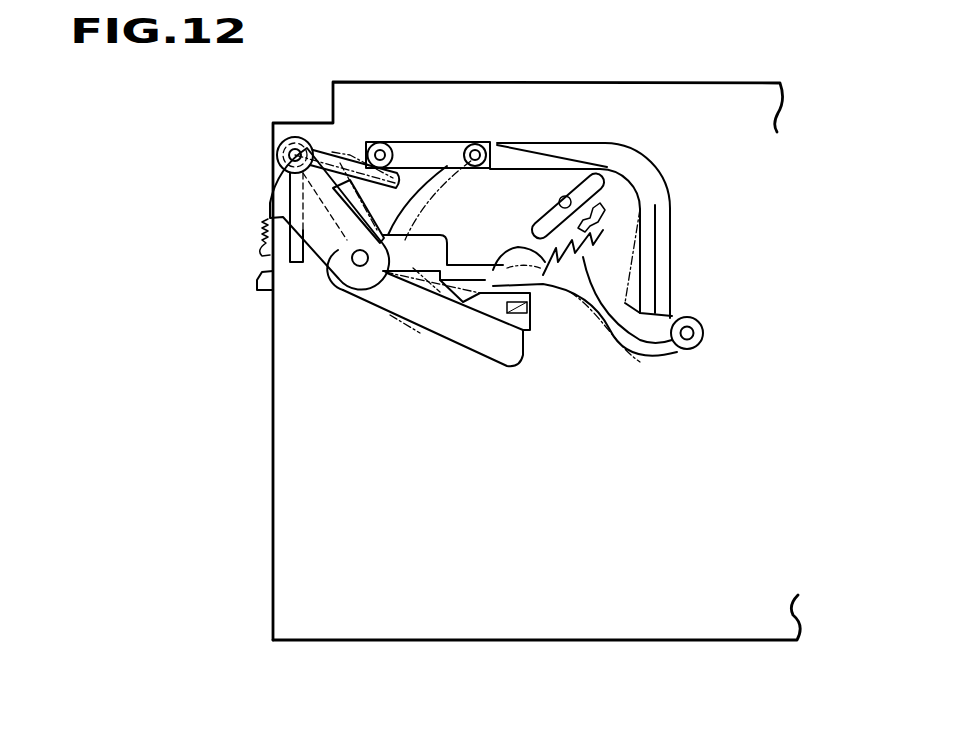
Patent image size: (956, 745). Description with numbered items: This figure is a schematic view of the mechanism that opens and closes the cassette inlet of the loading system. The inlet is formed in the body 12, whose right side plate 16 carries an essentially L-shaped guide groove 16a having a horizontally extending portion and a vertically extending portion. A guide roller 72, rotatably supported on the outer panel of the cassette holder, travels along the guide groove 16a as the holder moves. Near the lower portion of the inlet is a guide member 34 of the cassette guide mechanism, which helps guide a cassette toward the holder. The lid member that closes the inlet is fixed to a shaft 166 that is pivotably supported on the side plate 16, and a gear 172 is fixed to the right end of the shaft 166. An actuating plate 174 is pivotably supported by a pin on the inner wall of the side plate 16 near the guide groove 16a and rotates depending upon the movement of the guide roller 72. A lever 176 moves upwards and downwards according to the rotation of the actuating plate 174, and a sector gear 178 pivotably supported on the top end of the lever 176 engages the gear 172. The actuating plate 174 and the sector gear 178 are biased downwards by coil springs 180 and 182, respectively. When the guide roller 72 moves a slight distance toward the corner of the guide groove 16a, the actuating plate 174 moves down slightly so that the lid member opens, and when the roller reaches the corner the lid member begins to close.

The body 12 is at (548, 641).
The side plate 16 is at (661, 82).
The guide groove 16a is at (447, 142).
The guide roller 72 is at (385, 142).
The guide member 34 is at (257, 284).
The shaft 166 is at (297, 142).
The gear 172 is at (277, 152).
The actuating plate 174 is at (542, 157).
The lever 176 is at (410, 318).
The sector gear 178 is at (322, 262).
The coil spring 180 is at (587, 287).
The coil spring 182 is at (262, 236).